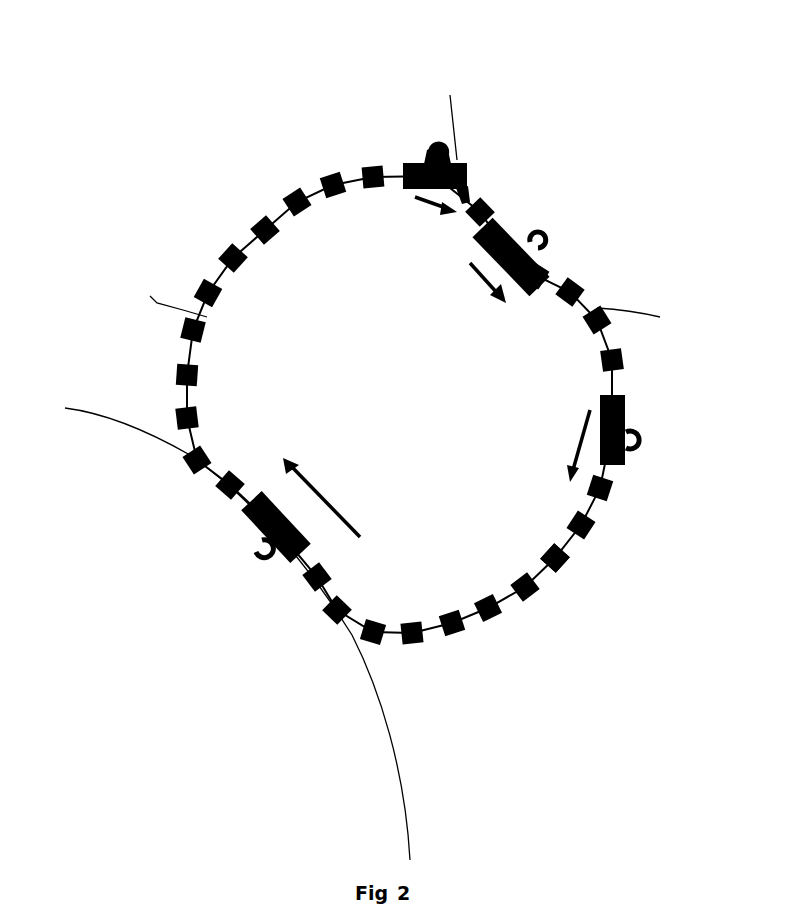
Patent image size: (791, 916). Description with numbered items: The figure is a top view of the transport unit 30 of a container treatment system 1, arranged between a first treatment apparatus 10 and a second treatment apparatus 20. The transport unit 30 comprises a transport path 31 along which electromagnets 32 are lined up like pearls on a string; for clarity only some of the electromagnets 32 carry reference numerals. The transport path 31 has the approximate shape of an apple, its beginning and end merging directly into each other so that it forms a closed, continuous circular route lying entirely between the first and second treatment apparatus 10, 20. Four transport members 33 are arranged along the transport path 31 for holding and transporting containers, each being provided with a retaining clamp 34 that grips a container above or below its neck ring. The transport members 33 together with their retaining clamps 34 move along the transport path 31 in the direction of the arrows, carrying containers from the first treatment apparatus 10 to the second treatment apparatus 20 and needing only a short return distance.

The container treatment system 1 is at (452, 55).
The first treatment apparatus 10 is at (455, 108).
The second treatment apparatus 20 is at (100, 420).
The transport unit 30 is at (262, 148).
The transport path 31 is at (647, 360).
The electromagnets 32 is at (224, 249).
The transport members 33 is at (283, 588).
The retaining clamp 34 is at (423, 155).